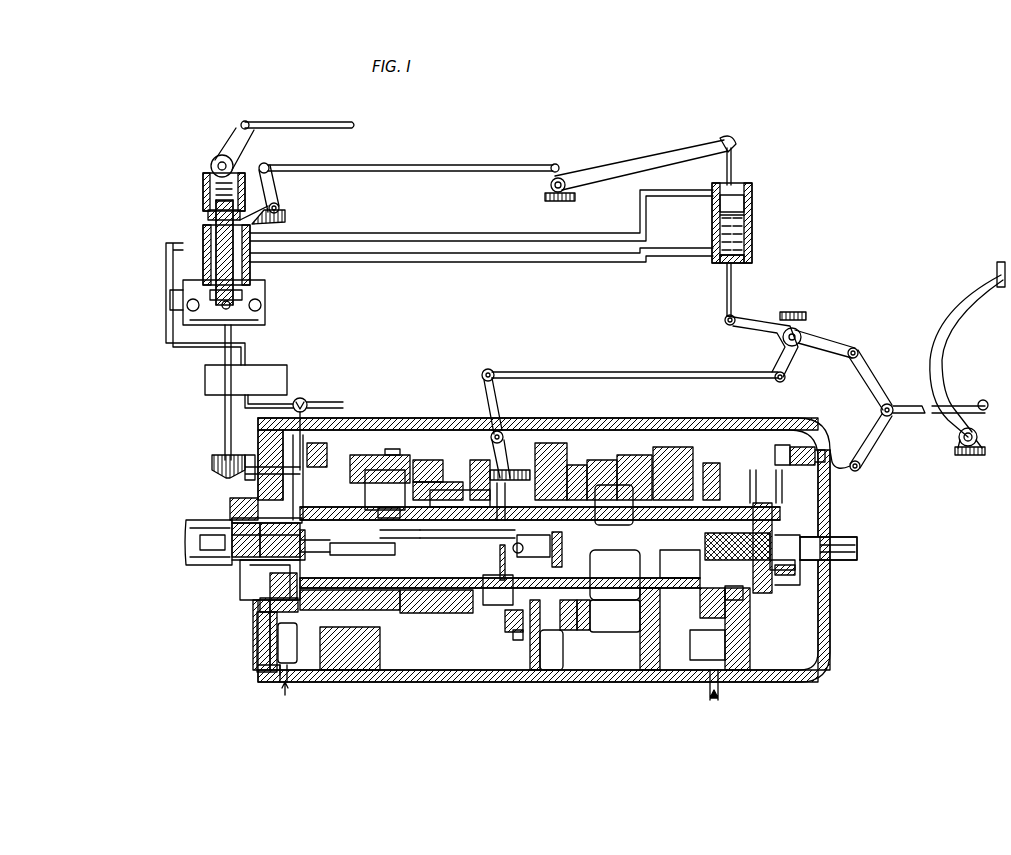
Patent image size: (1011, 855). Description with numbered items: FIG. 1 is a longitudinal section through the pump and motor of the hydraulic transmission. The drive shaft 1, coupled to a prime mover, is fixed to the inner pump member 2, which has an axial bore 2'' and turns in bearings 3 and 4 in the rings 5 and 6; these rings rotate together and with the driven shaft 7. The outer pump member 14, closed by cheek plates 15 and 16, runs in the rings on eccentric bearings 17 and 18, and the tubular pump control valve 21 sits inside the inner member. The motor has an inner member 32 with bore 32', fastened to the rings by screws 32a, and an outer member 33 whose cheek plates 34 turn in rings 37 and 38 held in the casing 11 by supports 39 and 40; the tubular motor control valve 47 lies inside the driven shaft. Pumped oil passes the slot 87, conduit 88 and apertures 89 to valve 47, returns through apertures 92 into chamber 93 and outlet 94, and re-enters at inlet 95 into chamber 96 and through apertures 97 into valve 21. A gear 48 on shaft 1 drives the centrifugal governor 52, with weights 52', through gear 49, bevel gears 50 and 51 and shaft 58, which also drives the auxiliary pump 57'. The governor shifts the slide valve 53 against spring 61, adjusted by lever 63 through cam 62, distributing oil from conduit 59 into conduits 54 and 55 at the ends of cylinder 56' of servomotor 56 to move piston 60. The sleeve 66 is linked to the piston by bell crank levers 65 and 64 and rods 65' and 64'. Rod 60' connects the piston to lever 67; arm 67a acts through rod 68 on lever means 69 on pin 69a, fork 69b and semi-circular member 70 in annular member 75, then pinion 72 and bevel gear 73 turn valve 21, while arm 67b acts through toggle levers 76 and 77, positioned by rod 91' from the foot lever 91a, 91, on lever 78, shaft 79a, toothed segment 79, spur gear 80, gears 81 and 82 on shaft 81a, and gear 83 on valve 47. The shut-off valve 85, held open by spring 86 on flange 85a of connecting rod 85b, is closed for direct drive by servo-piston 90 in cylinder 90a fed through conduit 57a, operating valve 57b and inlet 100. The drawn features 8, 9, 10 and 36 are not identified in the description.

The drive shaft 1 is at (203, 547).
The inner rotary pump member 2 is at (540, 553).
The shaft portion 2'' is at (411, 542).
The bearing 3 is at (260, 630).
The bearing 4 is at (465, 612).
The ring 5 is at (328, 460).
The ring 6 is at (448, 468).
The driven shaft 7 is at (845, 552).
The passage 8 is at (777, 466).
The chamber 9 is at (553, 635).
The chamber 10 is at (707, 624).
The casing 11 is at (740, 425).
The outer annular pump member 14 is at (370, 640).
The cheek plate 15 is at (385, 490).
The cheek plate 16 is at (418, 470).
The bearing 17 is at (370, 440).
The bearing 18 is at (455, 450).
The pump control valve 21 is at (425, 615).
The inner rotary motor member 32 is at (611, 505).
The bore 32' is at (720, 470).
The screws 32a is at (498, 590).
The outer annular motor member 33 is at (610, 635).
The cheek plates 34 is at (605, 462).
The chamber 36 is at (630, 570).
The ring 37 is at (574, 470).
The ring 38 is at (640, 462).
The support 39 is at (567, 450).
The support 40 is at (672, 445).
The motor control valve 47 is at (690, 570).
The fixed gear 48 is at (752, 253).
The gear 49 is at (300, 430).
The bevel gear 50 is at (243, 470).
The bevel gear 51 is at (212, 460).
The centrifugal governor 52 is at (241, 302).
The centrifugal weights 52' is at (185, 283).
The slide valve 53 is at (208, 214).
The conduit 54 is at (384, 232).
The conduit 55 is at (462, 265).
The servomotor 56 is at (754, 223).
The cylinder 56' is at (760, 217).
The pump 57' is at (258, 365).
The conduit 57a is at (338, 420).
The operating valve 57b is at (302, 396).
The shaft 58 is at (225, 421).
The conduit 59 is at (166, 294).
The piston 60 is at (758, 199).
The rod 60' is at (761, 289).
The spring 61 is at (203, 188).
The cam 62 is at (212, 162).
The manually operated lever 63 is at (242, 140).
The bell crank lever 64 is at (640, 163).
The rod 64' is at (759, 165).
The bell crank lever 65 is at (279, 193).
The rod 65' is at (413, 156).
The sleeve 66 is at (250, 246).
The lever 67 is at (755, 323).
The lever arm 67a is at (787, 373).
The lever arm 67b is at (862, 322).
The rod 68 is at (684, 378).
The lever means 69 is at (485, 392).
The pin 69a is at (512, 432).
The fork 69b is at (504, 447).
The semi-circular member 70 is at (520, 640).
The pinion 72 is at (478, 495).
The bevel gear 73 is at (562, 537).
The annular member 75 is at (555, 450).
The toggle lever 76 is at (862, 375).
The toggle lever 77 is at (878, 445).
The lever 78 is at (845, 470).
The toothed segment 79 is at (790, 505).
The shaft 79a is at (790, 450).
The spur gear 80 is at (800, 580).
The gear 81 is at (752, 468).
The shaft 81a is at (770, 460).
The gear 82 is at (800, 445).
The gear 83 is at (755, 580).
The shut-off valve 85 is at (418, 548).
The flange 85a is at (255, 585).
The connecting rod 85b is at (232, 519).
The spring 86 is at (318, 552).
The slot 87 is at (467, 543).
The conduit 88 is at (498, 546).
The apertures 89 is at (550, 550).
The servo-piston 90 is at (255, 555).
The cylinder 90a is at (235, 560).
The foot operated lever means 91 is at (960, 406).
The rod 91' is at (909, 394).
The foot operated lever 91a is at (941, 345).
The apertures 92 is at (960, 437).
The chamber 93 is at (740, 640).
The outlet 94 is at (722, 692).
The inlet 95 is at (283, 690).
The chamber 96 is at (262, 670).
The apertures 97 is at (230, 503).
The inlet 100 is at (186, 538).